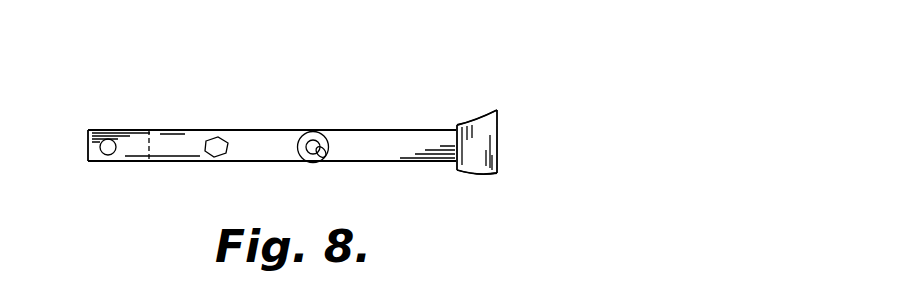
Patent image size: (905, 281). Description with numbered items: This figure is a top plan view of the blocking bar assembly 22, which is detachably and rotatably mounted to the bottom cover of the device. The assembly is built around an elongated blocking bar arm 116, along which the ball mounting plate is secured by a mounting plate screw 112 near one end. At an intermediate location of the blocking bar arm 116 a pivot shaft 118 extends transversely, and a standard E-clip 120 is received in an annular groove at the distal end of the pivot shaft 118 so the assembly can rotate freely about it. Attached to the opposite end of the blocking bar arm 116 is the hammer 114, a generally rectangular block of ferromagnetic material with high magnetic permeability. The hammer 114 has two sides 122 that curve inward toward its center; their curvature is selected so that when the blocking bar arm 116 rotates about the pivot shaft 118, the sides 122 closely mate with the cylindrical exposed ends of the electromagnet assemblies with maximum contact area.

The blocking bar assembly 22 is at (120, 188).
The mounting plate screw 112 is at (213, 147).
The hammer 114 is at (497, 155).
The blocking bar arm 116 is at (282, 132).
The pivot shaft 118 is at (338, 160).
The pivot shaft E-clip 120 is at (327, 142).
The sides 122 is at (474, 122).